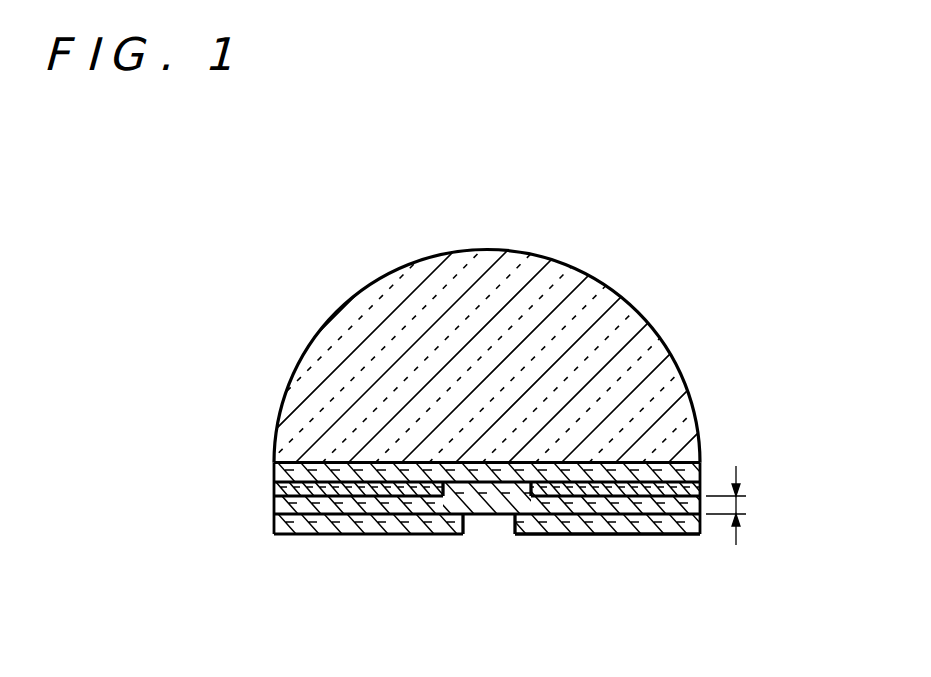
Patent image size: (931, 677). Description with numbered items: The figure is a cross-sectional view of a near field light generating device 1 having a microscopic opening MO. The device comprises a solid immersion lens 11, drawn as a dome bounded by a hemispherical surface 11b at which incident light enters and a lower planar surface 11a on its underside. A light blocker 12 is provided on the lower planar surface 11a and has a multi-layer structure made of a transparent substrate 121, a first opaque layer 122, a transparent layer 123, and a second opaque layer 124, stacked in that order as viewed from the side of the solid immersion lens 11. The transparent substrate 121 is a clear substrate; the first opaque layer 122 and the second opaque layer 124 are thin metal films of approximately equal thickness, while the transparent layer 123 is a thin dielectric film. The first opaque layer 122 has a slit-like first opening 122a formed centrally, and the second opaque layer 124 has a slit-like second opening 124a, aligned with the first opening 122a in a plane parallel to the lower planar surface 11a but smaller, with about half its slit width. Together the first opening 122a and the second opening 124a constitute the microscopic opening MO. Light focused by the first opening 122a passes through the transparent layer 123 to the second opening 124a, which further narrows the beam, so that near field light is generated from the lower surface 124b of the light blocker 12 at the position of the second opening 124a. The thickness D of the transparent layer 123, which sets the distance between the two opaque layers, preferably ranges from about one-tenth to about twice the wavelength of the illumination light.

The near field light generating device 1 is at (252, 245).
The solid immersion lens 11 is at (663, 313).
The lower planar surface 11a is at (702, 450).
The hemispherical surface 11b is at (602, 280).
The light blocker 12 is at (160, 441).
The transparent substrate 121 is at (275, 470).
The first opaque layer 122 is at (275, 488).
The first opening 122a is at (528, 490).
The transparent layer 123 is at (275, 503).
The second opaque layer 124 is at (275, 523).
The second opening 124a is at (511, 514).
The lower surface 124b is at (679, 535).
The microscopic opening MO is at (367, 562).
The thickness D is at (736, 506).